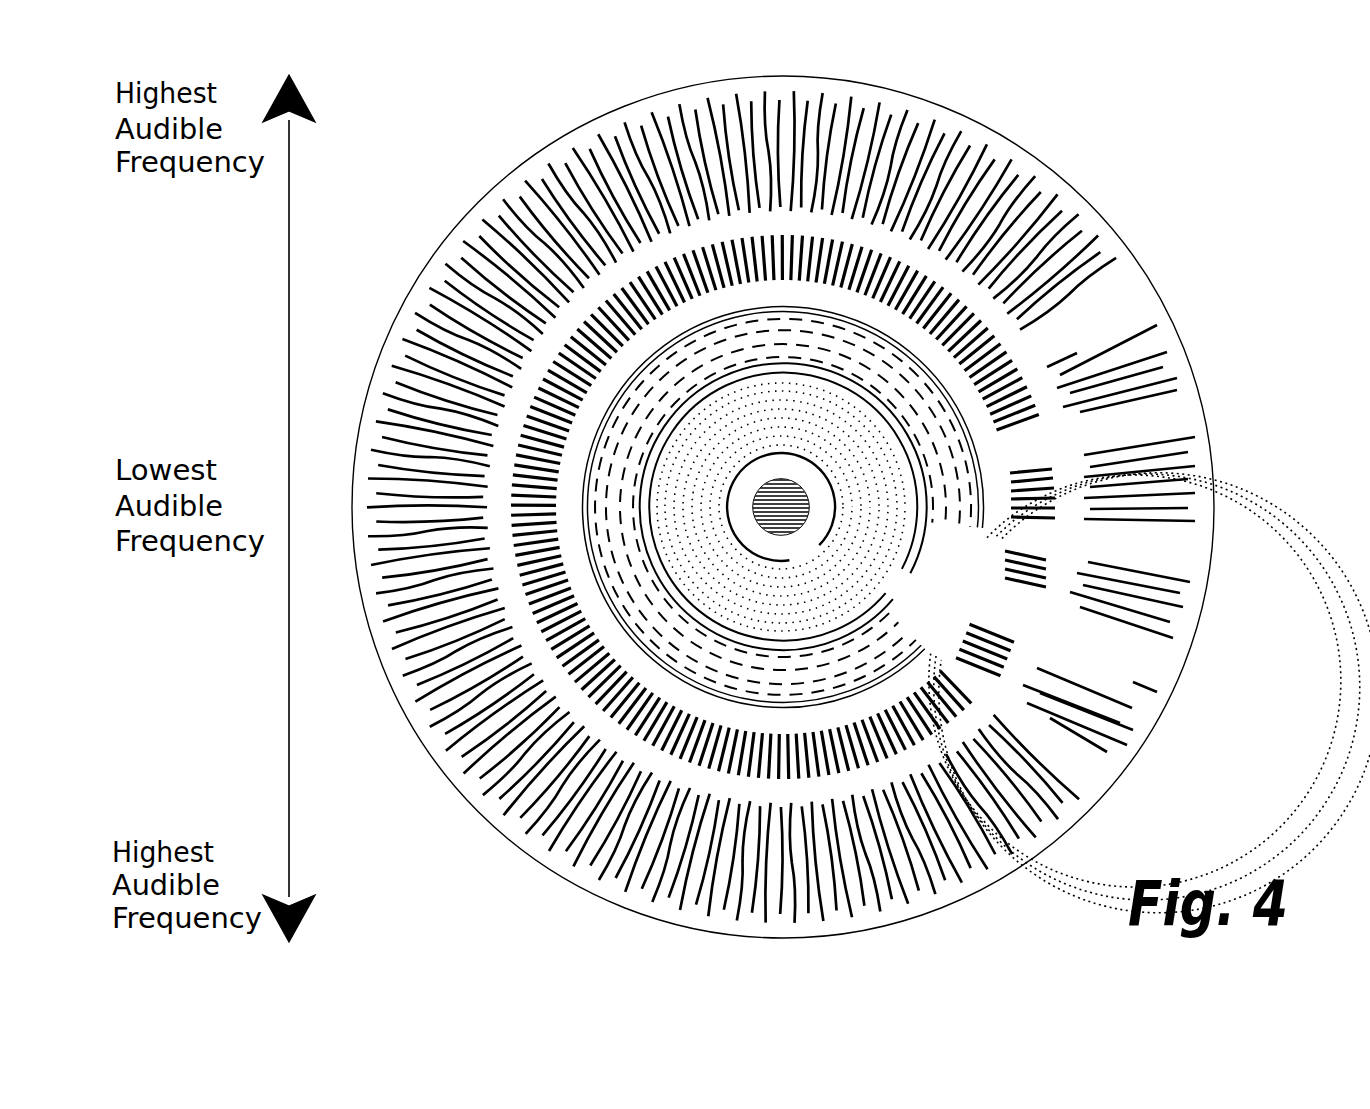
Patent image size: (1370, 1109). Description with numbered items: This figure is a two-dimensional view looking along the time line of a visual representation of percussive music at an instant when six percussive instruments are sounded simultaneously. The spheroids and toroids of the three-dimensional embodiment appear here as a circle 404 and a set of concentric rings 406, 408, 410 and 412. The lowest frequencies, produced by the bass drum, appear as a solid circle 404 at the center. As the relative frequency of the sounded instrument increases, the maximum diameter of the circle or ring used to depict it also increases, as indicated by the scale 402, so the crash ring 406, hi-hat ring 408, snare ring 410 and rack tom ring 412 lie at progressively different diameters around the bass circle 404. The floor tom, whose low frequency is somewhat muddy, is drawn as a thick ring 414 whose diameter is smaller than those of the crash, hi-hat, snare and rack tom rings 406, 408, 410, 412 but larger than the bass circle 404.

The scale 402 is at (289, 138).
The circle 404 is at (790, 538).
The ring 406 is at (998, 162).
The ring 408 is at (1000, 362).
The ring 410 is at (1002, 454).
The ring 412 is at (980, 532).
The thick ring 414 is at (908, 572).